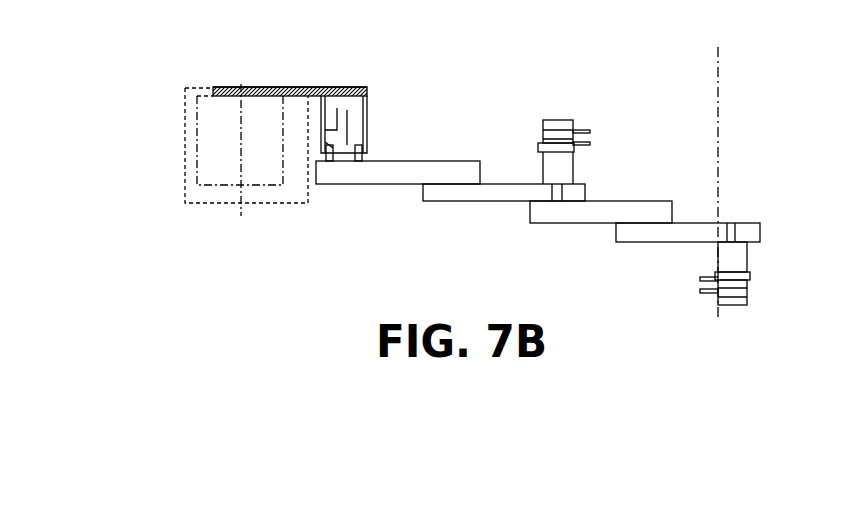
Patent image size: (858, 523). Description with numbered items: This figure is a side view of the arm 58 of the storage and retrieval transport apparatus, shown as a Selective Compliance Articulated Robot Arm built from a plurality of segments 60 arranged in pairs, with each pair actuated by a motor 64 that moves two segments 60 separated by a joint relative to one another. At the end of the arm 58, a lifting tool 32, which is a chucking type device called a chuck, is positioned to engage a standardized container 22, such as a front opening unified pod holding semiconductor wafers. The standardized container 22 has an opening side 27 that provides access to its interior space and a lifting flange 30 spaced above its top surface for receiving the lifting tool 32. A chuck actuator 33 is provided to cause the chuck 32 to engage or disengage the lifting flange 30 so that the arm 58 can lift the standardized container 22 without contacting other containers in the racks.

The standardized container 22 is at (210, 140).
The opening side 27 is at (183, 120).
The lifting flange 30 is at (225, 90).
The lifting tool 32 is at (283, 88).
The chuck actuator 33 is at (358, 108).
The arm 58 is at (470, 202).
The segments 60 is at (513, 183).
The motor 64 is at (562, 120).